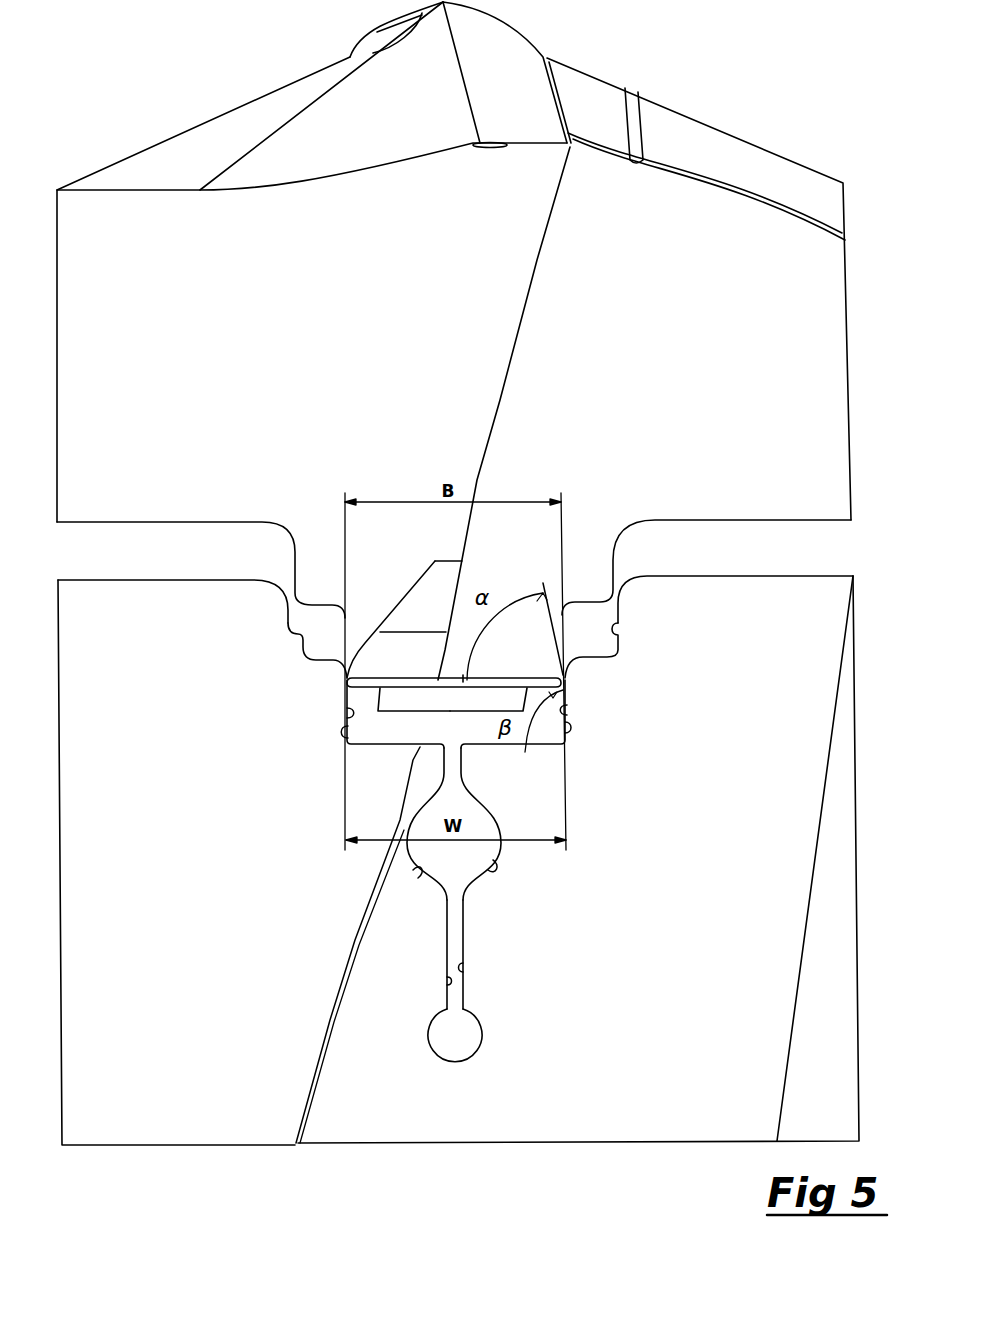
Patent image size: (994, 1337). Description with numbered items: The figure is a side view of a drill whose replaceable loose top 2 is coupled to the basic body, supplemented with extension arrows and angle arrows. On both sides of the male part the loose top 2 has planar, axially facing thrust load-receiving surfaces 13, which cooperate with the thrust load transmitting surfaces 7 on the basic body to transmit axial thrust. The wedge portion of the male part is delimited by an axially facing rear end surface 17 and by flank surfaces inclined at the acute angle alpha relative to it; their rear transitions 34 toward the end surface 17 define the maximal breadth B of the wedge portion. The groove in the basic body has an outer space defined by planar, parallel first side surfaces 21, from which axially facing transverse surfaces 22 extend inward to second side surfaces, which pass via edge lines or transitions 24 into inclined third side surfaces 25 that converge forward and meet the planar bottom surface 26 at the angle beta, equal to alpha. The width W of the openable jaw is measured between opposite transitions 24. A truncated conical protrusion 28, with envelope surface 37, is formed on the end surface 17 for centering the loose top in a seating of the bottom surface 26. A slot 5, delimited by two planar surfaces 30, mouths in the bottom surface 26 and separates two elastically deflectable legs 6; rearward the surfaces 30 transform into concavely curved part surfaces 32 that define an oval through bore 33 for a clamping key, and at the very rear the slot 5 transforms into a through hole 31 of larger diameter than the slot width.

The loose top 2 is at (773, 138).
The slot 5 is at (447, 948).
The legs 6 is at (162, 620).
The thrust load transmitting surfaces 7 is at (203, 580).
The thrust load-receiving axially facing surfaces 13 is at (122, 524).
The rear end surface 17 is at (372, 696).
The first side surfaces 21 is at (613, 630).
The transverse surfaces 22 is at (305, 650).
The edge lines or transitions 24 is at (348, 716).
The third side surfaces 25 is at (345, 738).
The bottom surface 26 is at (383, 746).
The protrusion 28 is at (446, 711).
The planar surfaces 30 is at (444, 985).
The through hole 31 is at (462, 1040).
The concavely curved part surfaces 32 is at (418, 878).
The through bore 33 is at (480, 823).
The transitions 34 is at (347, 679).
The envelope surface 37 is at (378, 712).